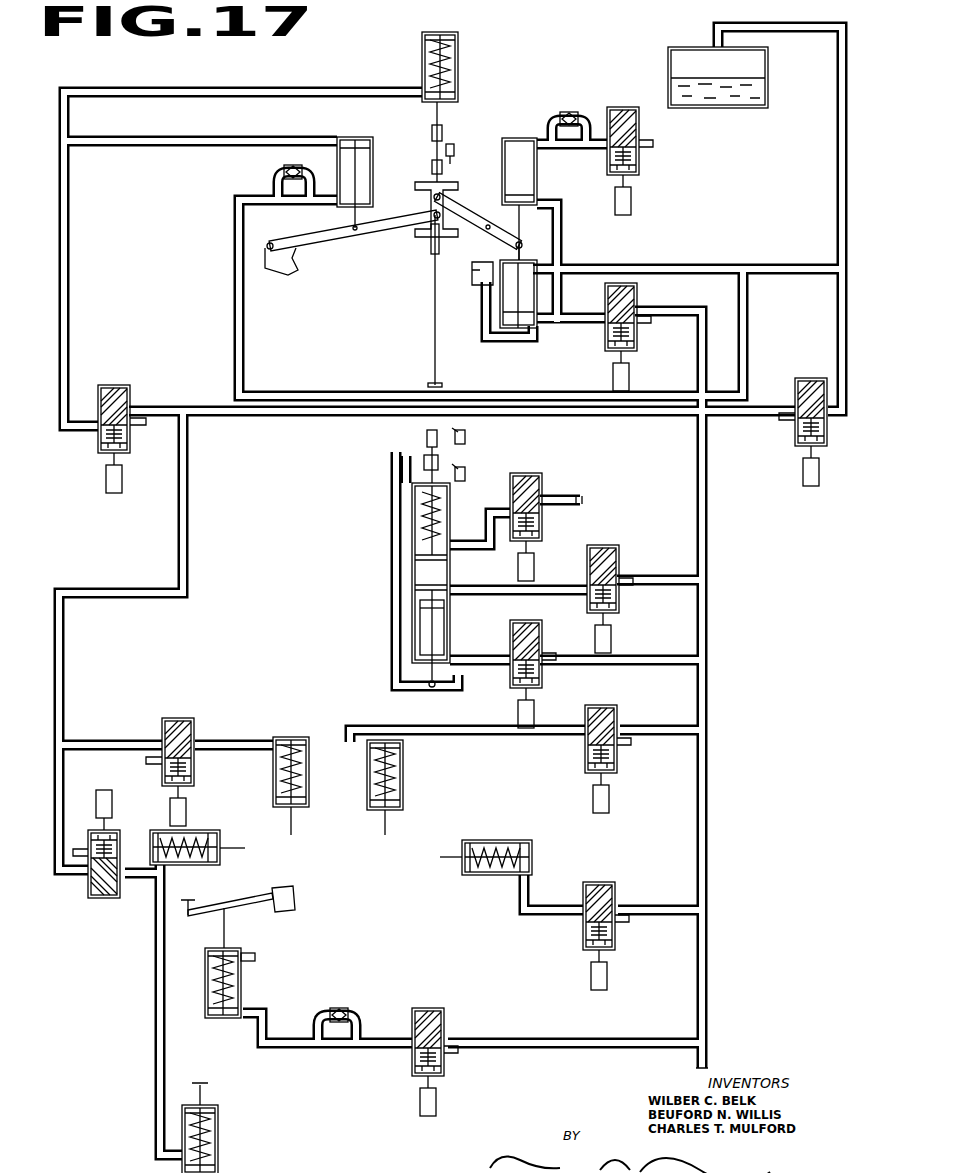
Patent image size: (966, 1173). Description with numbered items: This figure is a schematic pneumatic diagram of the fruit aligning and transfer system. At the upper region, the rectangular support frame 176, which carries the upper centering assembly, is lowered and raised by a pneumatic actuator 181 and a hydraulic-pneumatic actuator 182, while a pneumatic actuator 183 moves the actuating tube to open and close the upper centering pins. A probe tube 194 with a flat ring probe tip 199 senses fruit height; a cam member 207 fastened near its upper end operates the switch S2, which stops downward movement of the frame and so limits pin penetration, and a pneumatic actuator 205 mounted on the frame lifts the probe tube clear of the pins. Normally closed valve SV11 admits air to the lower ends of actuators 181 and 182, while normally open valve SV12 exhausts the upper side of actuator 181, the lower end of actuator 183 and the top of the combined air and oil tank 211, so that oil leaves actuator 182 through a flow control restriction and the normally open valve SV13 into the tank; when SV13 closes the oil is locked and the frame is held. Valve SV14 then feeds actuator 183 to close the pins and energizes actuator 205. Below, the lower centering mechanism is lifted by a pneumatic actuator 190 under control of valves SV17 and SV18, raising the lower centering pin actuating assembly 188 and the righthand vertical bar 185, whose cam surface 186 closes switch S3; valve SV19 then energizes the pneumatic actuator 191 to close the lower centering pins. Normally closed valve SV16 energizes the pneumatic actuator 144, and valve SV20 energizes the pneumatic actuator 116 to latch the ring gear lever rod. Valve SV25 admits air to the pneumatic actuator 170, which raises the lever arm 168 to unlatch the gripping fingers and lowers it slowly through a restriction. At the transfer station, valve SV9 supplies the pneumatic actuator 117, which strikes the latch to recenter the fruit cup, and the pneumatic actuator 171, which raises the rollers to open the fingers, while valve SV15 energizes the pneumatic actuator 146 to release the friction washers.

The pneumatic actuator 205 is at (420, 64).
The combined air and oil tank 211 is at (668, 50).
The pneumatic actuator 183 is at (345, 140).
The rectangular support frame 176 is at (412, 178).
The switch S2 is at (450, 144).
The cam member 207 is at (442, 168).
The hydraulic-pneumatic actuator 182 is at (519, 138).
The solenoid valve (normally open) SV13 is at (639, 170).
The pneumatic actuator 181 is at (500, 295).
The probe tube 194 is at (435, 334).
The probe tip 199 is at (428, 386).
The solenoid valve (normally closed) SV11 is at (636, 343).
The solenoid valve (normally open) SV14 is at (98, 446).
The solenoid valve (normally open) SV12 is at (795, 434).
The lower centering pin actuating assembly 188 is at (421, 446).
The switch S3 is at (467, 440).
The cam surface 186 is at (466, 476).
The solenoid valve SV19 is at (542, 481).
The pneumatic actuator 191 is at (420, 510).
The righthand vertical bar 185 is at (420, 562).
The pneumatic actuator 190 is at (416, 616).
The solenoid valve (normally closed) SV18 is at (619, 598).
The solenoid valve (normally open) SV17 is at (542, 672).
The solenoid valve SV15 is at (164, 720).
The pneumatic actuator 146 is at (292, 737).
The pneumatic actuator 144 is at (403, 776).
The solenoid valve (normally closed) SV16 is at (600, 778).
The pneumatic actuator 116 is at (508, 840).
The pneumatic actuator 117 is at (220, 866).
The solenoid valve SV9 is at (88, 896).
The lever arm 168 is at (192, 925).
The pneumatic actuator 170 is at (205, 968).
The solenoid valve (normally closed) SV20 is at (605, 952).
The solenoid valve SV25 is at (448, 1012).
The pneumatic actuator 171 is at (218, 1126).